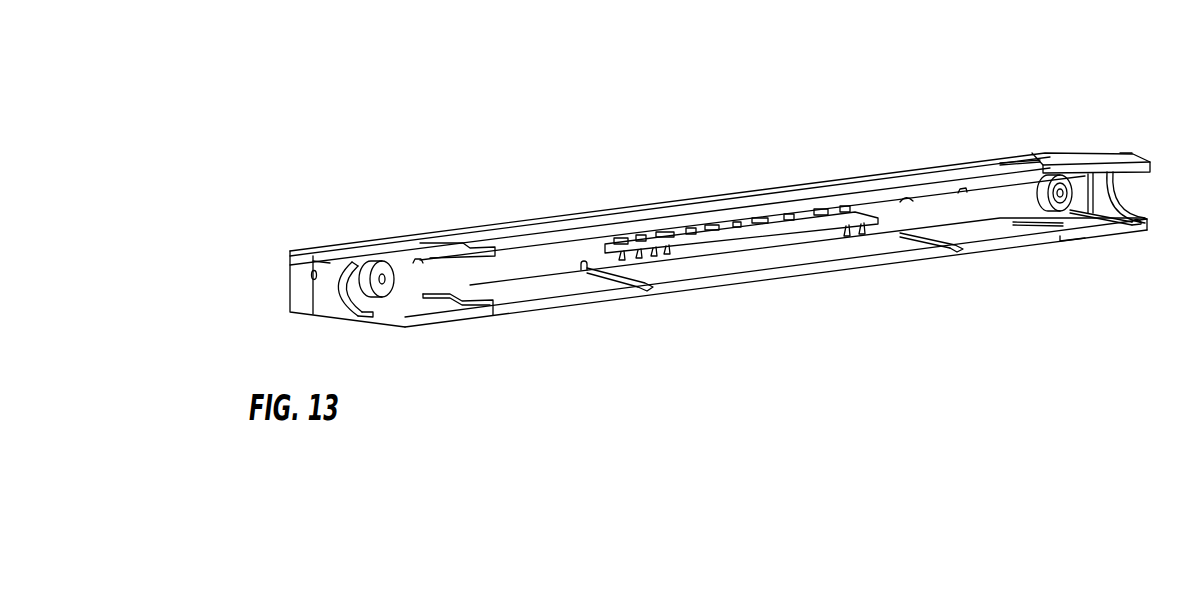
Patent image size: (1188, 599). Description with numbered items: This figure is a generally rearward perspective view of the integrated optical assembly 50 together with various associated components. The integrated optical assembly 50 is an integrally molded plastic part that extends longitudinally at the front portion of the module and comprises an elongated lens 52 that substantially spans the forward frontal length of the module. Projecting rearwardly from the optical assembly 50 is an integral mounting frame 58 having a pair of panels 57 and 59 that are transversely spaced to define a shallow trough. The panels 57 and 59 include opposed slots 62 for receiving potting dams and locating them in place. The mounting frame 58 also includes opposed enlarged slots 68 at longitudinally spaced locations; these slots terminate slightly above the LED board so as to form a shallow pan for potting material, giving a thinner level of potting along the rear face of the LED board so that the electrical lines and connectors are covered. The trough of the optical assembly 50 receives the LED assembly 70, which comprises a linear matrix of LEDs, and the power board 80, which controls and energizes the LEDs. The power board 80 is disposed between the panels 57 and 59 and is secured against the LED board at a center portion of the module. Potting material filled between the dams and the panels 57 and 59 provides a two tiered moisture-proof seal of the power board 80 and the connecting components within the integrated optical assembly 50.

The integrated optical assembly 50 is at (334, 241).
The elongated lens 52 is at (300, 298).
The panel 57 is at (520, 233).
The mounting frame 58 is at (972, 167).
The panel 59 is at (520, 288).
The slot 62 is at (640, 290).
The enlarged slot 68 is at (480, 313).
The LED assembly 70 is at (410, 283).
The power board 80 is at (745, 229).